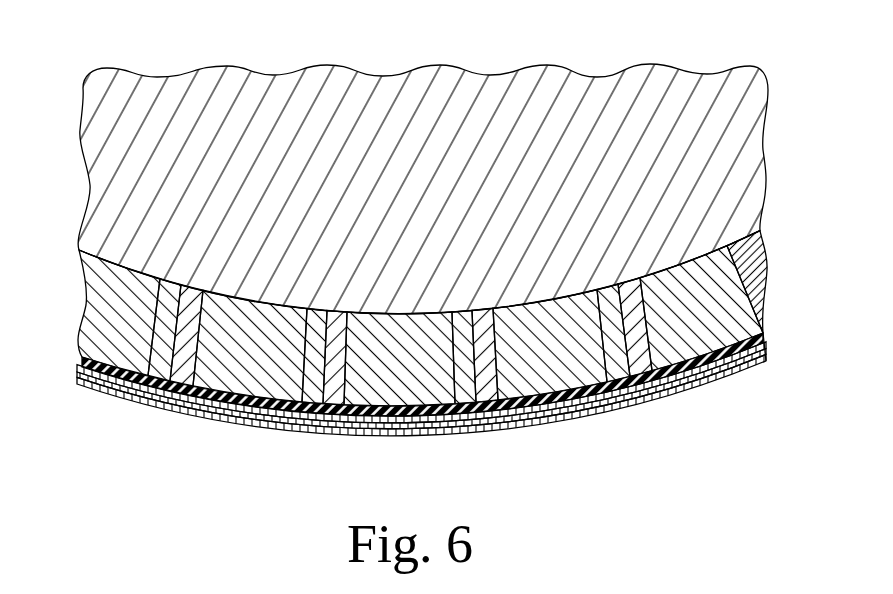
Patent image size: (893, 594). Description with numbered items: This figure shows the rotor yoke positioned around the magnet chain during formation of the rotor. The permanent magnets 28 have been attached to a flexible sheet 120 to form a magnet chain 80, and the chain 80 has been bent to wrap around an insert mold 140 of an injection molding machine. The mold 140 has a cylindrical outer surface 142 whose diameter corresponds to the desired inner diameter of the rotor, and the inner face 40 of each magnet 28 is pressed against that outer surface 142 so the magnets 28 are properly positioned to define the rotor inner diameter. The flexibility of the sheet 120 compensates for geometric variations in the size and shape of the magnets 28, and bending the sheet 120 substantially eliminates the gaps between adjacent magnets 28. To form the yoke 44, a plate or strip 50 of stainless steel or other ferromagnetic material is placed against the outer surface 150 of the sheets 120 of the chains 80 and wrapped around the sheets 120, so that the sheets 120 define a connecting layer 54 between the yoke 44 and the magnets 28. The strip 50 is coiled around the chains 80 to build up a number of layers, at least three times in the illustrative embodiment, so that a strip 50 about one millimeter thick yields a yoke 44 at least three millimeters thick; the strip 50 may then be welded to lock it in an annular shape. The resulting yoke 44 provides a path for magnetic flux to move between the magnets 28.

The insert mold 140 is at (553, 77).
The cylindrical outer surface 142 is at (660, 262).
The magnet chain 80 is at (95, 290).
The inner face 40 is at (697, 279).
The permanent magnet 28 is at (737, 305).
The sheet 120 is at (83, 357).
The outer surface 150 is at (680, 393).
The yoke 44 is at (570, 408).
The strip 50 is at (140, 400).
The connecting layer 54 is at (764, 340).